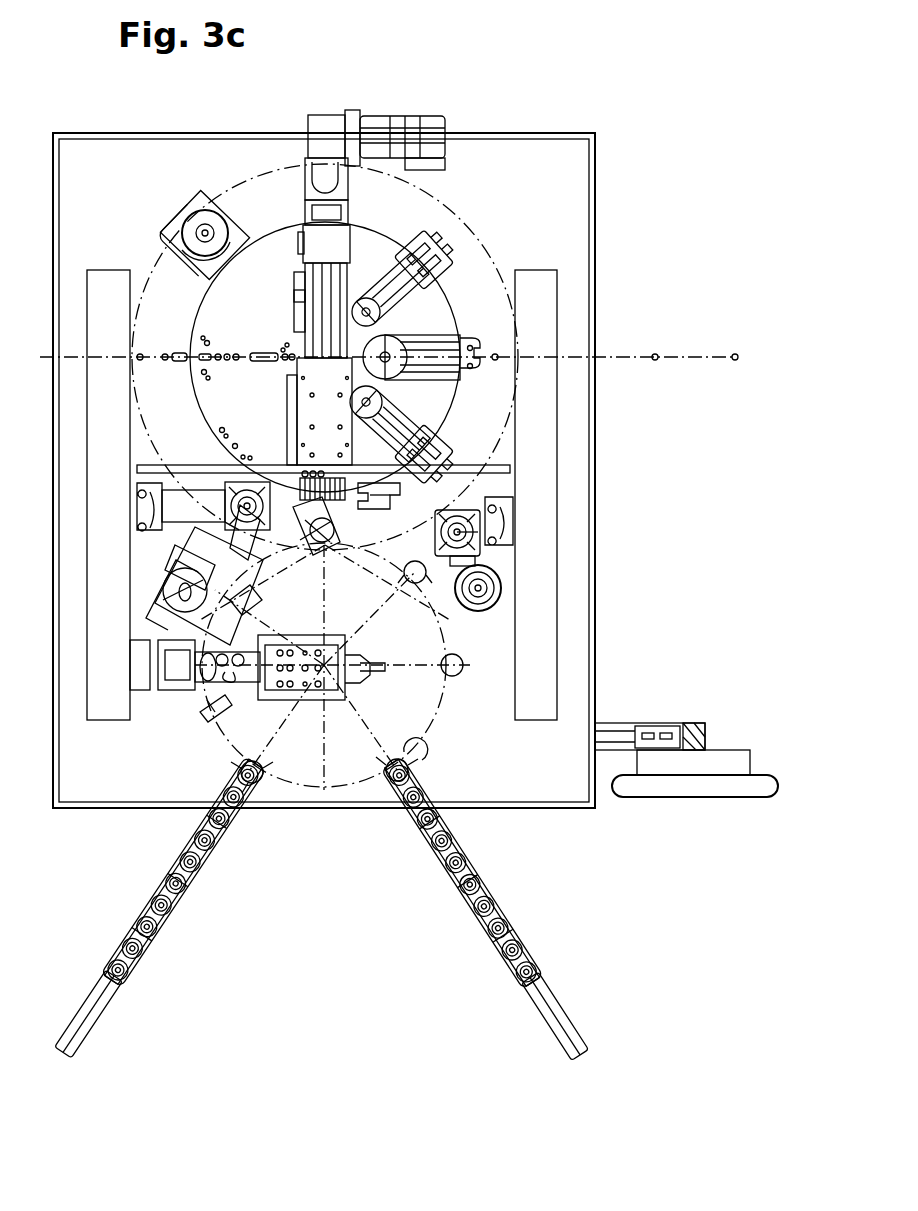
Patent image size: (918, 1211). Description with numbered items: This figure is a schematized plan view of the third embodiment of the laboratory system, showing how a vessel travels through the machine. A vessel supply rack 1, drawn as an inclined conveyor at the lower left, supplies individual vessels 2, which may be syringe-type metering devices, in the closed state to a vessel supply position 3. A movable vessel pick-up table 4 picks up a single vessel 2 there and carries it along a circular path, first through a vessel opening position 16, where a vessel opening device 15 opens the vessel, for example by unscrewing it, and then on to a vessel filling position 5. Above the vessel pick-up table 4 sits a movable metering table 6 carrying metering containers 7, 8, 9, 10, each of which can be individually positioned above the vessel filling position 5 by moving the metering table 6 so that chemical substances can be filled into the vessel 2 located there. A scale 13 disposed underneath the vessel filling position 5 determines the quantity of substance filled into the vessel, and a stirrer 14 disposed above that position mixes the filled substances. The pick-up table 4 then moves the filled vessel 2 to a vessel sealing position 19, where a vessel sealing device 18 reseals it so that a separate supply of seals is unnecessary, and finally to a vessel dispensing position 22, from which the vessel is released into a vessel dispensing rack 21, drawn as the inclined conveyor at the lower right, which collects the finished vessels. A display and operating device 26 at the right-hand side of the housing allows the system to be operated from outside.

The vessel supply rack 1 is at (98, 1026).
The vessels 2 is at (196, 895).
The vessel supply position 3 is at (258, 772).
The vessel pick-up table 4 is at (336, 678).
The vessel filling position 5 is at (386, 517).
The scale 13 is at (488, 470).
The metering table 6 is at (267, 329).
The metering container 7 is at (414, 434).
The metering container 8 is at (415, 335).
The metering container 9 is at (402, 250).
The metering container 10 is at (199, 234).
The stirrer 14 is at (296, 505).
The vessel opening device 15 is at (204, 575).
The vessel opening position 16 is at (252, 588).
The vessel sealing device 18 is at (482, 610).
The vessel sealing position 19 is at (415, 588).
The vessel dispensing rack 21 is at (555, 987).
The vessel dispensing position 22 is at (400, 762).
The display and operating device 26 is at (712, 760).